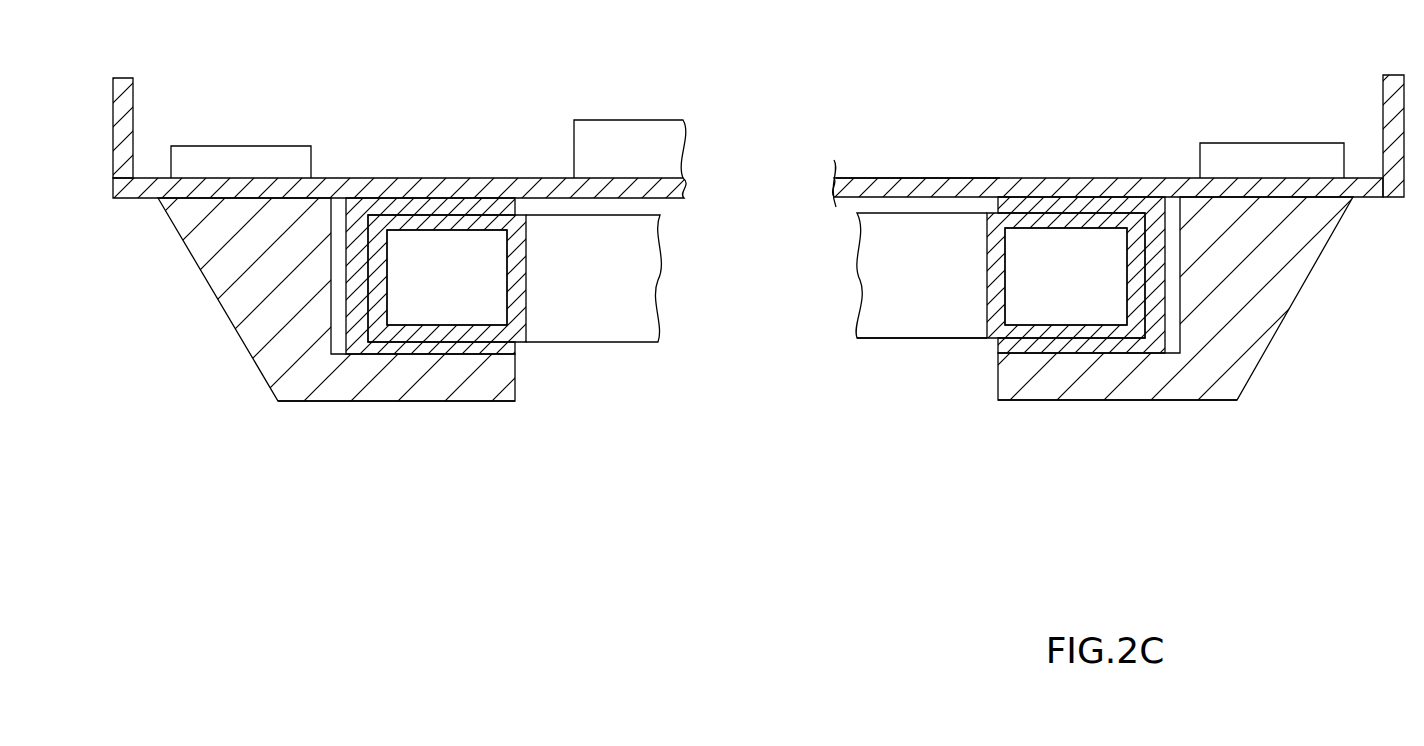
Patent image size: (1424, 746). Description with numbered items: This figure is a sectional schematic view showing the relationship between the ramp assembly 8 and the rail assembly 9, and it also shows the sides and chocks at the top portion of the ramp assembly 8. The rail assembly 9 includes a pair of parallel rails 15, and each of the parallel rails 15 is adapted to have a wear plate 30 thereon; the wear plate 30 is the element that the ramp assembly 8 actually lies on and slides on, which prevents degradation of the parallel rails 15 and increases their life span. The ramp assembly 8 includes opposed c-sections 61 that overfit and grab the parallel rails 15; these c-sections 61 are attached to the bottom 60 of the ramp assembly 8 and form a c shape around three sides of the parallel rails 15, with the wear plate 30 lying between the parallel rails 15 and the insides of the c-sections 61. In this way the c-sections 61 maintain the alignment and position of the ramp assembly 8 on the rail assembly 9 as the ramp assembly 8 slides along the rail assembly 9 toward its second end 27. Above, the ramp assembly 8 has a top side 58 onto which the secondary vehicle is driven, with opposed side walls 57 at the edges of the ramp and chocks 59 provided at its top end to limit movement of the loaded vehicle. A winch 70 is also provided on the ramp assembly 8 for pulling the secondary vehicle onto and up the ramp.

The ramp assembly 8 is at (897, 168).
The rail assembly 9 is at (890, 350).
The parallel rails 15 is at (465, 250).
The second end 27 is at (607, 303).
The wear plate 30 is at (408, 207).
The side walls 57 is at (135, 102).
The top side 58 is at (353, 178).
The chocks 59 is at (253, 147).
The bottom side 60 is at (139, 200).
The c-sections 61 is at (435, 401).
The winch 70 is at (610, 118).